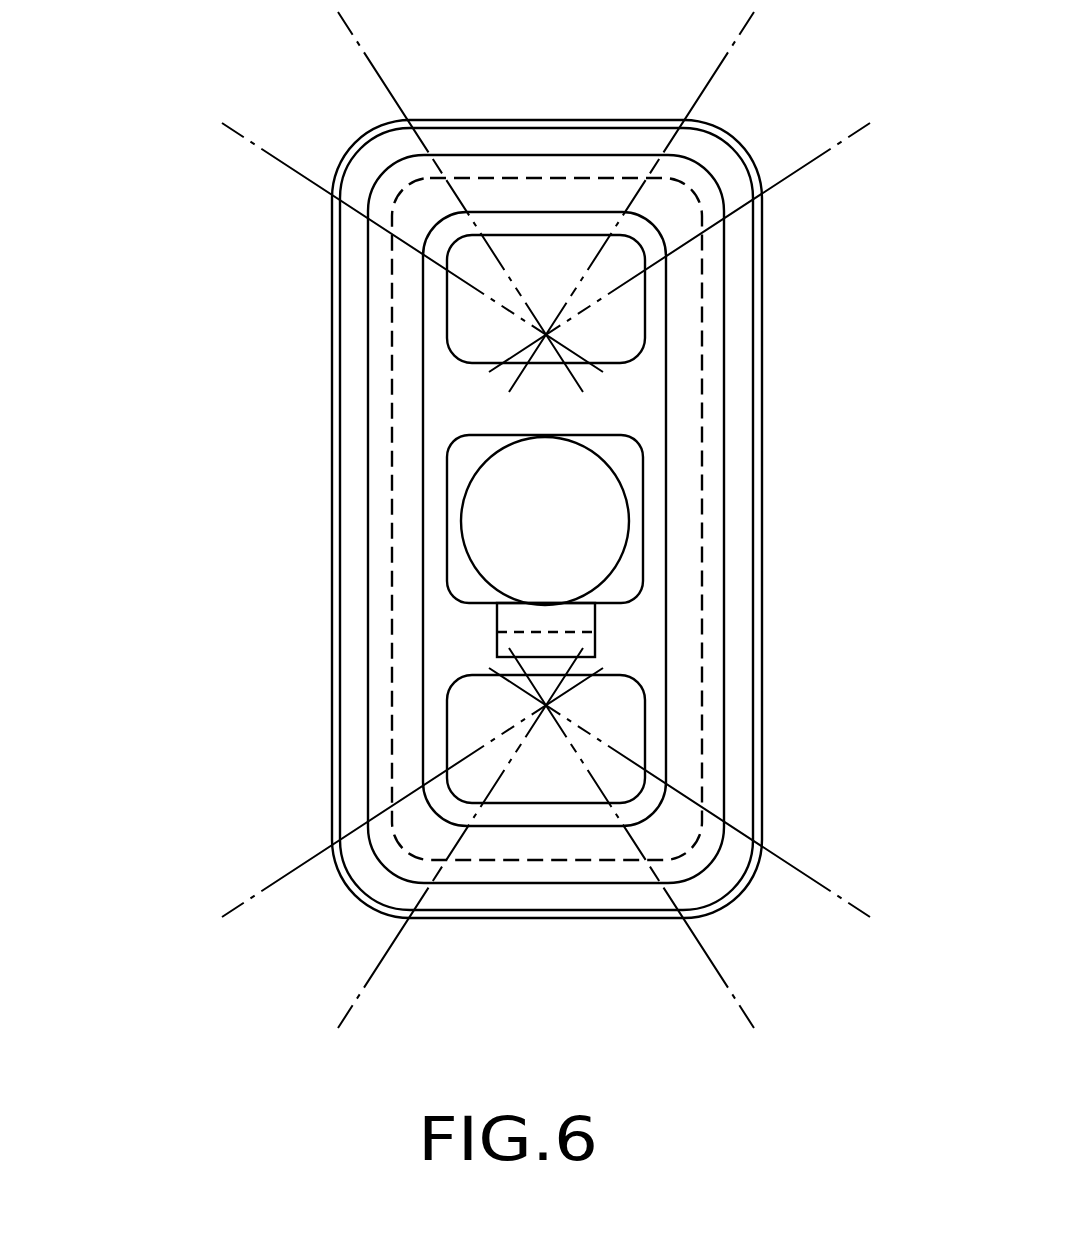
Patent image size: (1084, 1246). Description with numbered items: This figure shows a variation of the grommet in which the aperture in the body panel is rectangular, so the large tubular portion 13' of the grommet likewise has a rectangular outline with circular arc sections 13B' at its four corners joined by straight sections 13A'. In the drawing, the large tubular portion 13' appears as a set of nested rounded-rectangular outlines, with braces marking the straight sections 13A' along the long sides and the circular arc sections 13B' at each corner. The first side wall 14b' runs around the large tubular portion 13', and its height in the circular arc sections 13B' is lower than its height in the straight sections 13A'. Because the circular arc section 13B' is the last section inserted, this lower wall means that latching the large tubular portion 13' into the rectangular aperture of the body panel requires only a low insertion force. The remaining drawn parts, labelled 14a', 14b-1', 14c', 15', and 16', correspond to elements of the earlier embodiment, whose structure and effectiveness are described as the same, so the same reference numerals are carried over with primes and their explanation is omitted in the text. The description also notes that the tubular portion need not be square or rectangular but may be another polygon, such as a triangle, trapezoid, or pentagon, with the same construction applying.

The large tubular portion 13' is at (432, 519).
The straight sections 13A' is at (549, 522).
The circular arc sections 13B' is at (546, 523).
The first layer of key body 14a' is at (401, 519).
The first side wall 14b' is at (384, 519).
The protrusions of second layer 14b-1' is at (355, 519).
The third layer of key body 14c' is at (415, 519).
The dome portion 15' is at (692, 501).
The contact portion 16' is at (705, 630).